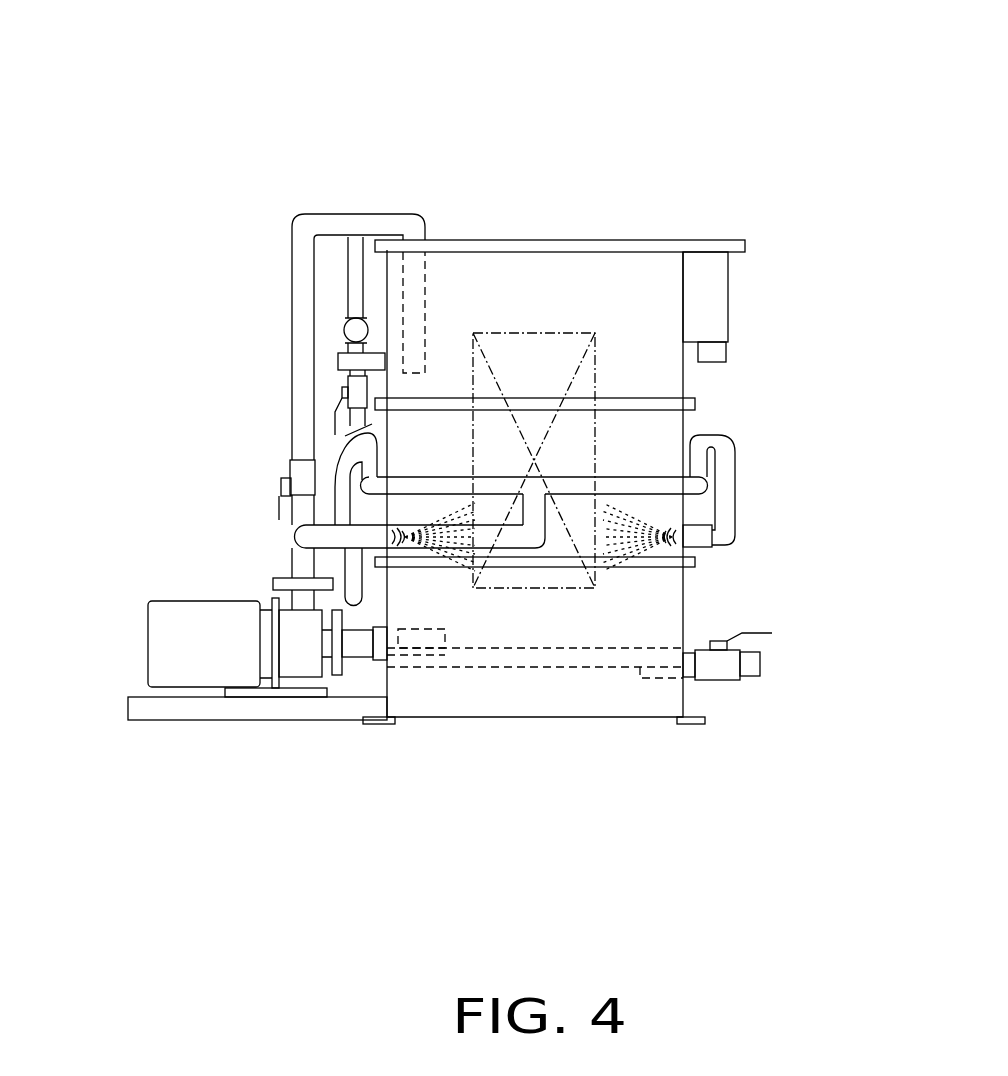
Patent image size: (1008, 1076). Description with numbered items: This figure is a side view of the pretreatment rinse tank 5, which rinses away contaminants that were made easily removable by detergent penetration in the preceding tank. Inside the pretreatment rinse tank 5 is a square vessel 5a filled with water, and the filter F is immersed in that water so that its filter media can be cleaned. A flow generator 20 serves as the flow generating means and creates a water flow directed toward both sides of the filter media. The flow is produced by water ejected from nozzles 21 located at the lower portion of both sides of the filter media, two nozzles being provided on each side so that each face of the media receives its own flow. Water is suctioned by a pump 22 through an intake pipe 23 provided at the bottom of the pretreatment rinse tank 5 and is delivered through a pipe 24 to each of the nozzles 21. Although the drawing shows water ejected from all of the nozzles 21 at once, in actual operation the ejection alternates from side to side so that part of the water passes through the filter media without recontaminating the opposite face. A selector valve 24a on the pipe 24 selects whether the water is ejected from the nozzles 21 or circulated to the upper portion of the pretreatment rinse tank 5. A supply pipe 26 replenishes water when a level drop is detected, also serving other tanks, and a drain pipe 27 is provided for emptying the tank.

The pretreatment rinse tank 5 is at (757, 125).
The square vessel 5a is at (550, 275).
The filter F is at (597, 366).
The flow generator 20 is at (866, 489).
The nozzles 21 is at (700, 538).
The pump 22 is at (202, 615).
The intake pipe 23 is at (355, 643).
The pipe 24 is at (532, 533).
The selector valve 24a is at (303, 473).
The supply pipe 26 is at (348, 277).
The drain pipe 27 is at (717, 667).